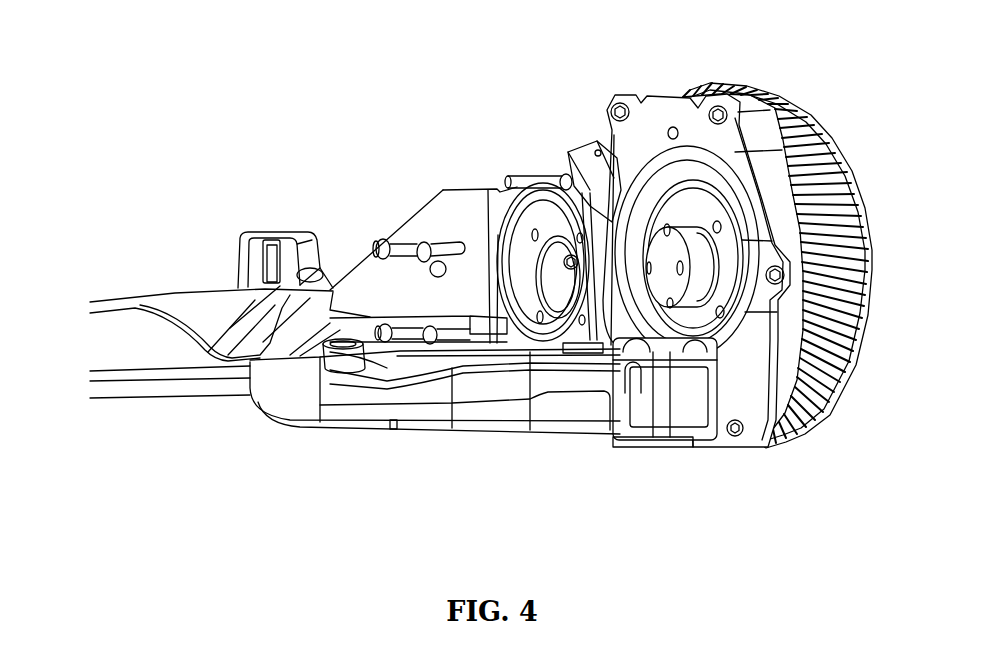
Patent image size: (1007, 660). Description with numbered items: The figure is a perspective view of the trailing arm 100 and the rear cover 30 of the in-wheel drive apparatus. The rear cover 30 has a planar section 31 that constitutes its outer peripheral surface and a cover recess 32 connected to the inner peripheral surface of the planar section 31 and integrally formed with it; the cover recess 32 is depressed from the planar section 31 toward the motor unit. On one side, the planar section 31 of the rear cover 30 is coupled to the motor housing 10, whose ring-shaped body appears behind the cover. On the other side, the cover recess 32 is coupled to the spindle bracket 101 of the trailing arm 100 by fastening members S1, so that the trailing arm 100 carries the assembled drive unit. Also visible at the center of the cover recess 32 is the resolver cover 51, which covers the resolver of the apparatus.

The motor housing 10 is at (819, 114).
The rear cover 30 is at (646, 259).
The planar section 31 is at (655, 108).
The cover recess 32 is at (702, 205).
The resolver cover 51 is at (667, 283).
The trailing arm 100 is at (411, 432).
The spindle bracket 101 is at (543, 218).
The fastening members S1 is at (396, 247).